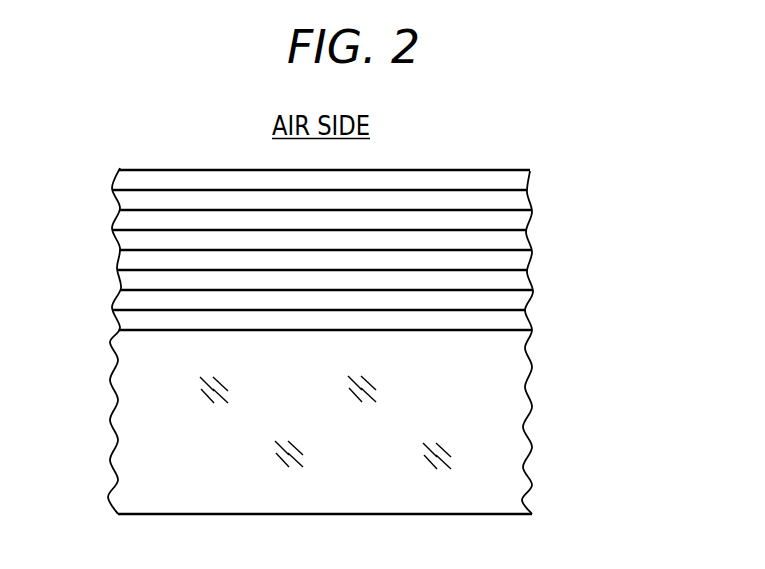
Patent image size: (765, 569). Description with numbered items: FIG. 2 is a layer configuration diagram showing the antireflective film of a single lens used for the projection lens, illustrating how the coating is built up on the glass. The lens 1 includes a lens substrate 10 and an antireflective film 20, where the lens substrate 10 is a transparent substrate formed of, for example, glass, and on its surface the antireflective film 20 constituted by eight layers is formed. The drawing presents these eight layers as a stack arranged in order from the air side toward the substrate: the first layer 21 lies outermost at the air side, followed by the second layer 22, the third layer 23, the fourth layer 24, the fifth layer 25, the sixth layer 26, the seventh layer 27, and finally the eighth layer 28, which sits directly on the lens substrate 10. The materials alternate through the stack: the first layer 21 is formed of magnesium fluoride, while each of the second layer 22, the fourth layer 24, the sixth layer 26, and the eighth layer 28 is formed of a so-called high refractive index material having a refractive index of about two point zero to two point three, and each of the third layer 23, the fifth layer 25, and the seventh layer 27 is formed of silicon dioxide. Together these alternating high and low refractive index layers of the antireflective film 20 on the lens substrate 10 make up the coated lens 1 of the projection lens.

The lens 1 is at (76, 162).
The lens substrate 10 is at (522, 429).
The antireflective film 20 is at (602, 142).
The first layer 21 is at (520, 181).
The second layer 22 is at (520, 201).
The third layer 23 is at (520, 221).
The fourth layer 24 is at (522, 231).
The fifth layer 25 is at (522, 258).
The sixth layer 26 is at (522, 282).
The seventh layer 27 is at (522, 302).
The eighth layer 28 is at (522, 322).